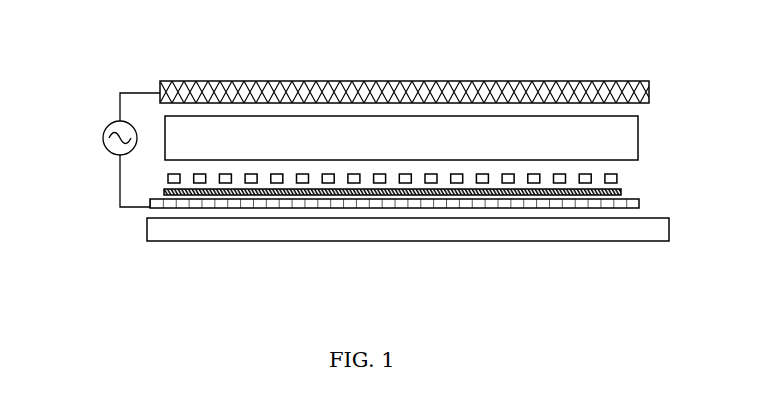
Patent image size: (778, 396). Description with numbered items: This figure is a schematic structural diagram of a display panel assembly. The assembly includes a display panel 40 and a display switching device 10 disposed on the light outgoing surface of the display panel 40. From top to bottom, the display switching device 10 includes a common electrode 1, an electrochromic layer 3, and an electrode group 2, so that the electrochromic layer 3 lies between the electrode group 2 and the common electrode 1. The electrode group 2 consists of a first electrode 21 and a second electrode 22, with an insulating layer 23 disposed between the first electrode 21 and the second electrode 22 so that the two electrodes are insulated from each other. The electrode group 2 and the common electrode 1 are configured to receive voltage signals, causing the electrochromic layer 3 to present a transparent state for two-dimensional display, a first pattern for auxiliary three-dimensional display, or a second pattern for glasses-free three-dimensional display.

The common electrode 1 is at (430, 88).
The electrode group 2 is at (415, 253).
The electrochromic layer 3 is at (627, 143).
The display switching device 10 is at (97, 70).
The first electrode 21 is at (428, 210).
The second electrode 22 is at (537, 180).
The insulating layer 23 is at (480, 192).
The display panel 40 is at (213, 230).